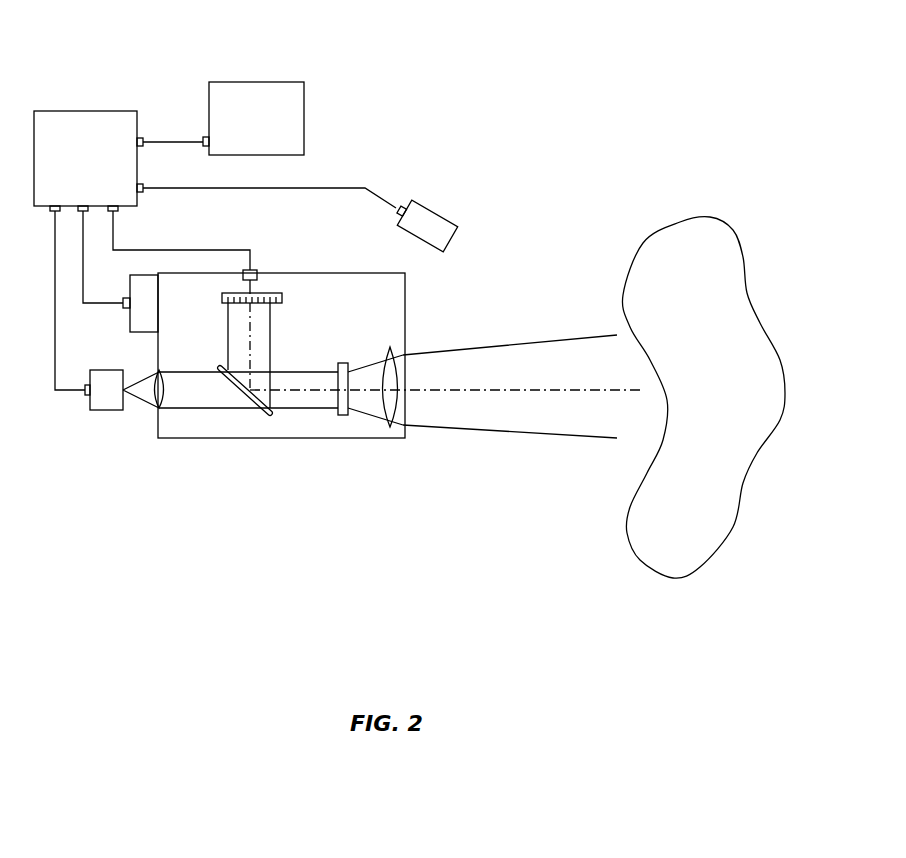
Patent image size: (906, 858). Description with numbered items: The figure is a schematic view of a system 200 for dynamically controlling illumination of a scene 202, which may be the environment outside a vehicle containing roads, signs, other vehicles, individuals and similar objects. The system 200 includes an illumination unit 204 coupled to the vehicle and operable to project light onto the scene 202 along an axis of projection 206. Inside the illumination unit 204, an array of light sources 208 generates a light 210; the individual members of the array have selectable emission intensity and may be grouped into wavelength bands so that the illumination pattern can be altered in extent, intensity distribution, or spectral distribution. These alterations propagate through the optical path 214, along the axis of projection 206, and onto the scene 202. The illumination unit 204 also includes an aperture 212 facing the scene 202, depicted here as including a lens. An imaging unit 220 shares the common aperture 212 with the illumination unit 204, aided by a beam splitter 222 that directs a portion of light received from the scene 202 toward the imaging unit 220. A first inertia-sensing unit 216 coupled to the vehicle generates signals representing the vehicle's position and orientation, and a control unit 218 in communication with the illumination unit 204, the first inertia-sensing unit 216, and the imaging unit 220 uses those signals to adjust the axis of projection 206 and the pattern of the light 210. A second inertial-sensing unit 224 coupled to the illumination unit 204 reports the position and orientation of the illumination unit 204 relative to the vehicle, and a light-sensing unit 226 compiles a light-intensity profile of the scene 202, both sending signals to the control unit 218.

The system 200 is at (480, 67).
The scene 202 is at (735, 408).
The illumination unit 204 is at (358, 440).
The axis of projection 206 is at (482, 390).
The array of light sources 208 is at (268, 293).
The light 210 is at (273, 322).
The aperture 212 is at (403, 373).
The optical path 214 is at (293, 387).
The first inertia-sensing unit 216 is at (248, 82).
The control unit 218 is at (80, 111).
The imaging unit 220 is at (103, 410).
The beam splitter 222 is at (243, 393).
The second inertial-sensing unit 224 is at (130, 322).
The light-sensing unit 226 is at (442, 210).